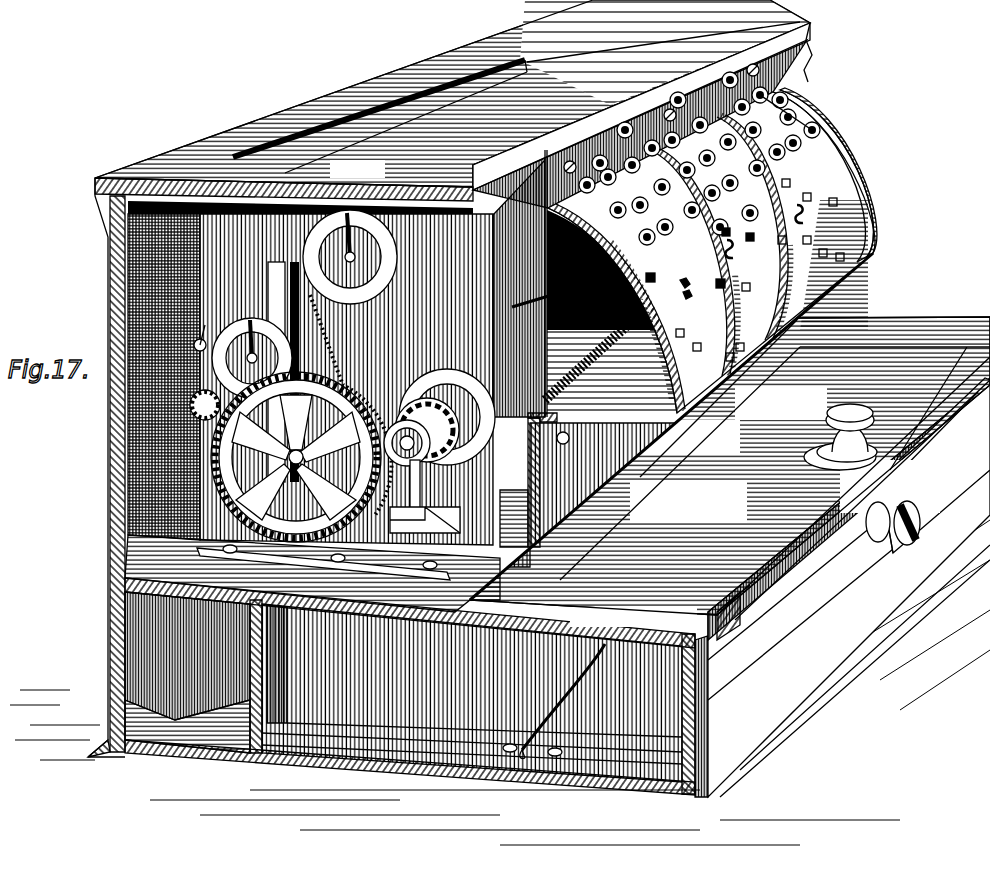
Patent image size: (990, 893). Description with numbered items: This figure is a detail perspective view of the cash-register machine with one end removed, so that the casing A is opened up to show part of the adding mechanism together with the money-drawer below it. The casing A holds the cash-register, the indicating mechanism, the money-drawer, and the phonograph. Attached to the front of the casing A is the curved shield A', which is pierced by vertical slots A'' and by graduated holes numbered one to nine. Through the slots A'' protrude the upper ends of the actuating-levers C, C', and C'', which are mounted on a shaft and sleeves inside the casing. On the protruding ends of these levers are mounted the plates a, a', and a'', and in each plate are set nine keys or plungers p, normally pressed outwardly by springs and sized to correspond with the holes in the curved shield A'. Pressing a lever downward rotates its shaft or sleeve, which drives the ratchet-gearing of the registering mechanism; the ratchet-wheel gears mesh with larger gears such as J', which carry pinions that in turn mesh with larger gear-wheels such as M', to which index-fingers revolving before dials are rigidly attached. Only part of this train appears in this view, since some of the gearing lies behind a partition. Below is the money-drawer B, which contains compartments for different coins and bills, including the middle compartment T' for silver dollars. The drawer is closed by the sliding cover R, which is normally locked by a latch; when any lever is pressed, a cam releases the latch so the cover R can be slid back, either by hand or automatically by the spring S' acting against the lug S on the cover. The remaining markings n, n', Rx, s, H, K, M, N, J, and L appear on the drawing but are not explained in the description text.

The casing A is at (500, 422).
The curved shield A' is at (693, 251).
The vertical slots A'' is at (833, 209).
The plate a is at (786, 128).
The plate a' is at (794, 192).
The plate a'' is at (722, 231).
The keys or plungers p is at (740, 165).
The pin n is at (662, 212).
The pin n' is at (670, 289).
The actuating-lever C is at (695, 279).
The actuating-lever C' is at (726, 297).
The actuating-lever C'' is at (635, 285).
The sliding cover R is at (730, 446).
The shelf plate Rx is at (323, 573).
The compartment T' is at (840, 428).
The money-drawer B is at (385, 680).
The screw s is at (920, 524).
The lug S is at (562, 701).
The spring S' is at (566, 715).
The back wall H is at (312, 413).
The dial K is at (352, 316).
The dial wheel M is at (252, 358).
The gear-wheel M' is at (278, 372).
The indicator N is at (195, 339).
The gear wheel J is at (301, 418).
The gear J' is at (205, 419).
The counter wheel L is at (439, 451).